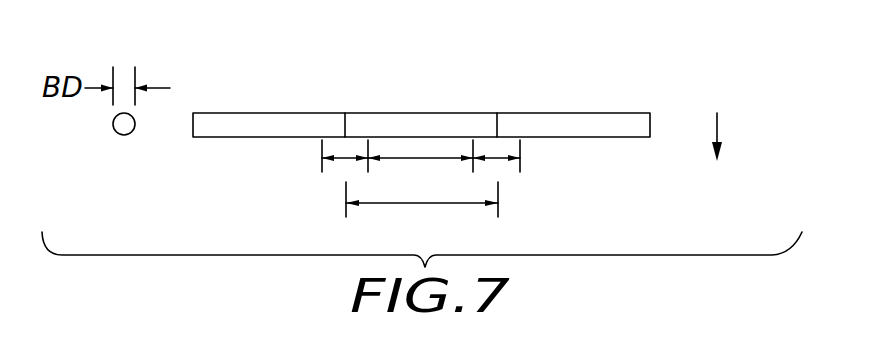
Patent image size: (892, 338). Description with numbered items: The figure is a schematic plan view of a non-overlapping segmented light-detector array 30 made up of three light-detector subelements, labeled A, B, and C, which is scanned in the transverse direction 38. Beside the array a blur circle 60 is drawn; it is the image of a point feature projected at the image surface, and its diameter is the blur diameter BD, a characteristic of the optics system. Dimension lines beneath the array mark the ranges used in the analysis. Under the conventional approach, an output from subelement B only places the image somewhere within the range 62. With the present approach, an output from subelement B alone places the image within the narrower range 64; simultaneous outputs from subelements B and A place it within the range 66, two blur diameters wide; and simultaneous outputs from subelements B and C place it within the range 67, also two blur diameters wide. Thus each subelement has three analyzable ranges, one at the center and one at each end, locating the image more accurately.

The segmented light-detector array 30 is at (212, 72).
The blur circle 60 is at (113, 126).
The transverse direction 38 is at (719, 124).
The range 62 is at (417, 204).
The range 64 is at (410, 158).
The range 66 is at (342, 159).
The range 67 is at (500, 159).